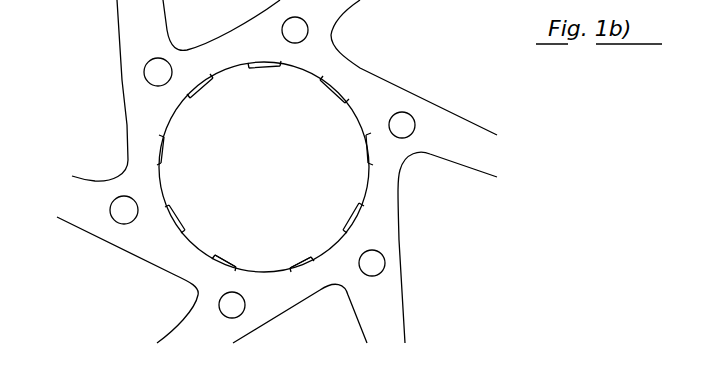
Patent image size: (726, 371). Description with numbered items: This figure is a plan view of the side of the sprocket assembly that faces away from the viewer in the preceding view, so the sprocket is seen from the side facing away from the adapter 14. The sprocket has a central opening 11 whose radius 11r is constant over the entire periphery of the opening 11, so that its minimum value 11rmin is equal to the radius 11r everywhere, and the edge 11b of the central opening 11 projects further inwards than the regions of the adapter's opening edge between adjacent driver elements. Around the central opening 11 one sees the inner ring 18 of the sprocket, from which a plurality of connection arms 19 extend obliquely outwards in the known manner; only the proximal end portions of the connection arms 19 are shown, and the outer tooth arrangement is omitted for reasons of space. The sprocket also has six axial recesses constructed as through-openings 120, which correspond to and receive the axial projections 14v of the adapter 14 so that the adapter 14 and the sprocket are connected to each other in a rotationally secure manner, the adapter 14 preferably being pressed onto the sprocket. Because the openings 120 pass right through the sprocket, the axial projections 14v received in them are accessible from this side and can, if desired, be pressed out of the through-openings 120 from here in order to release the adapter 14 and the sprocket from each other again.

The central opening 11 is at (477, 110).
The edge of the central opening 11b is at (263, 270).
The radius of the central opening 11r is at (233, 70).
The minimum radius of the central opening 11rmin is at (223, 157).
The through-openings 120 is at (401, 130).
The adapter 14 is at (356, 152).
The axial projections 14v is at (373, 263).
The inner ring 18 is at (387, 218).
The connection arms 19 is at (62, 172).